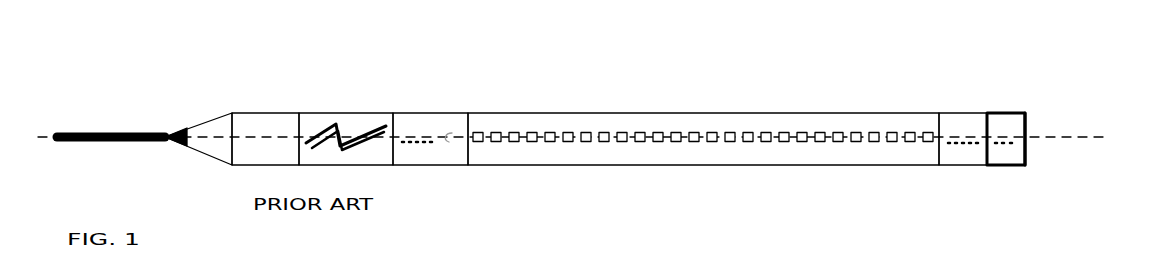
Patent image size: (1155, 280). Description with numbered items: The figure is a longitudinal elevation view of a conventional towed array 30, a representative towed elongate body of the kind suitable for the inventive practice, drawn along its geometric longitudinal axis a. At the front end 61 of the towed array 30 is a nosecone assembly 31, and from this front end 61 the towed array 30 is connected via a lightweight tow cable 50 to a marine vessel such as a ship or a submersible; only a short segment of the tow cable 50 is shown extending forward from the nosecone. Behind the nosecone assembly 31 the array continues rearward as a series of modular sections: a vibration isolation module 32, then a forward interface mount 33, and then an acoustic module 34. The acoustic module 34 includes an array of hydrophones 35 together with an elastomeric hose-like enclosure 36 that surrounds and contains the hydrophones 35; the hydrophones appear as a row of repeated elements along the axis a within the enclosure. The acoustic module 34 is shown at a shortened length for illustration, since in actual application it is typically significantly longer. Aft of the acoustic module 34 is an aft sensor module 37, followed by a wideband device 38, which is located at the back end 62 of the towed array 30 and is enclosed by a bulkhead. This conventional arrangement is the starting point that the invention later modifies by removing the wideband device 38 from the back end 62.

The towed array 30 is at (571, 149).
The nosecone assembly 31 is at (263, 112).
The vibration isolation module 32 is at (350, 112).
The forward interface mount 33 is at (427, 112).
The acoustic module 34 is at (702, 128).
The hydrophones 35 is at (555, 182).
The elastomeric hose-like enclosure 36 is at (815, 165).
The aft sensor module 37 is at (960, 110).
The wideband device 38 is at (1032, 110).
The lightweight tow cable 50 is at (105, 132).
The front end 61 is at (165, 120).
The back end 62 is at (1033, 152).
The geometric longitudinal axis a is at (1063, 138).